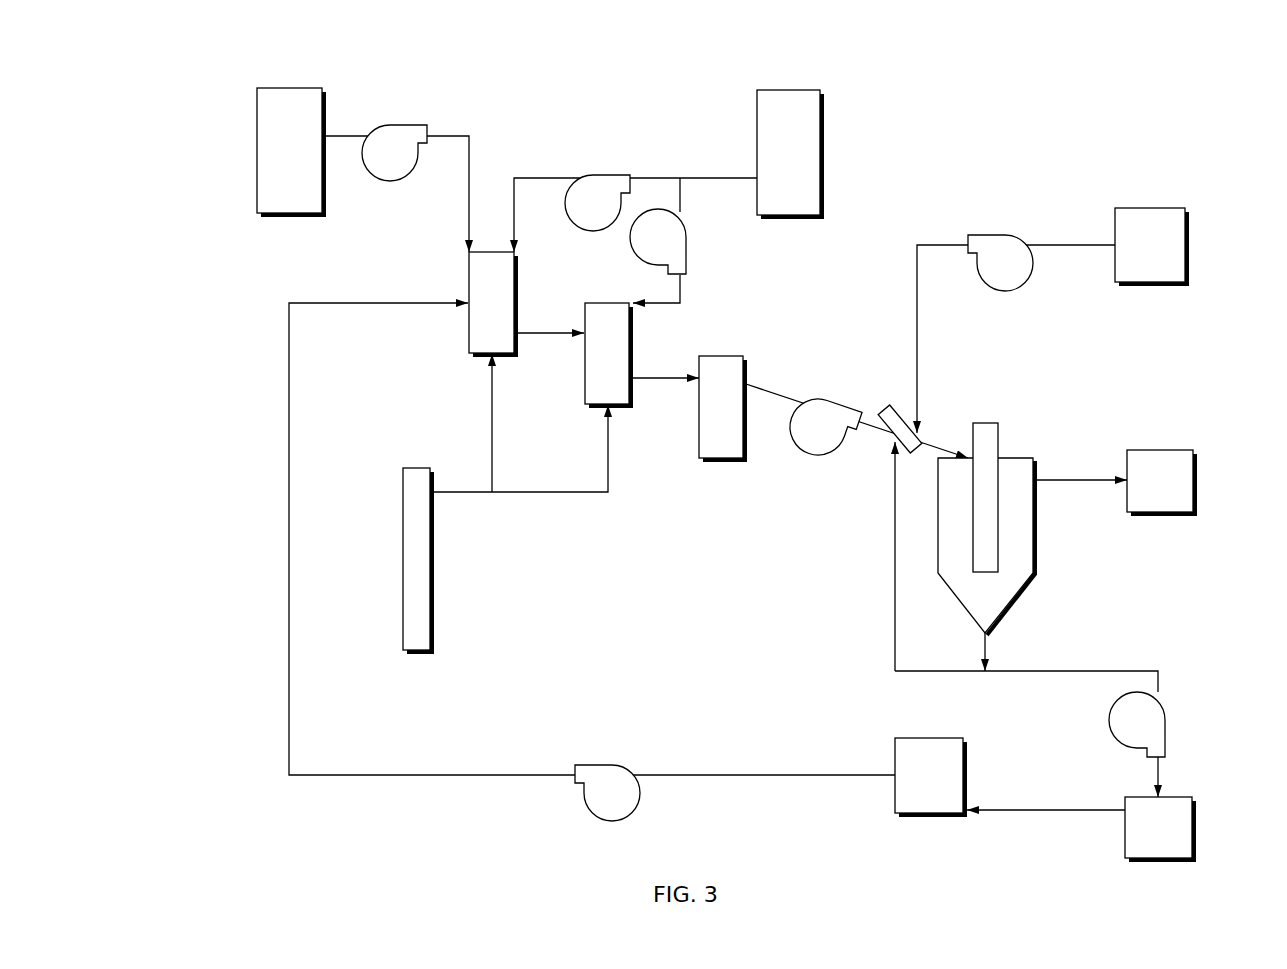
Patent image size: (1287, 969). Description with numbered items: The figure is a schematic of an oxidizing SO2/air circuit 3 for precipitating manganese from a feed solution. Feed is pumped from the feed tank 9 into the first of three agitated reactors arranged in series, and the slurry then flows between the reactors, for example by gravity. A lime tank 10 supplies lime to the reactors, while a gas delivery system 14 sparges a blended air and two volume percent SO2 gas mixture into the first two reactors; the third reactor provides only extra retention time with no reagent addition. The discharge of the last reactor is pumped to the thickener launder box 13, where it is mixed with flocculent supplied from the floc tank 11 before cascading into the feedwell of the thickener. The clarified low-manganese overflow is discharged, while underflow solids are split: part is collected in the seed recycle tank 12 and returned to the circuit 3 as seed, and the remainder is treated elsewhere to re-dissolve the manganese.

The SO2/air circuit 3 is at (845, 53).
The feed tank 9 is at (257, 130).
The lime tank 10 is at (757, 131).
The floc tank 11 is at (1189, 222).
The seed recycle tank 12 is at (967, 757).
The thickener launder box 13 is at (888, 410).
The gas delivery system 14 is at (433, 568).